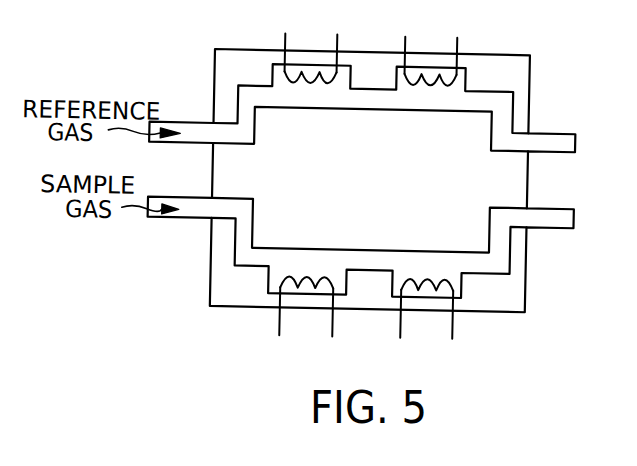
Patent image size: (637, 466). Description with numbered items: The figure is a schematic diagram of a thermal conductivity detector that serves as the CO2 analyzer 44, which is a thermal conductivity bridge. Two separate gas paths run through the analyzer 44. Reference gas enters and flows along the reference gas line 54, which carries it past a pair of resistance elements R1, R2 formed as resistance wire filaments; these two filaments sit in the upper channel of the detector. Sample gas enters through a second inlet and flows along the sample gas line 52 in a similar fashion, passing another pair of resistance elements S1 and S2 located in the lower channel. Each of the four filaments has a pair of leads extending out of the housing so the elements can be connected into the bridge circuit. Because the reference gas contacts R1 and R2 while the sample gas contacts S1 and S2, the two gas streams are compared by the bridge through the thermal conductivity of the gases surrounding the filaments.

The CO2 analyzer 44 is at (233, 307).
The sample gas line 52 is at (404, 252).
The reference gas line 54 is at (354, 99).
The resistance element R1 is at (310, 46).
The resistance element R2 is at (431, 47).
The resistance element S1 is at (306, 316).
The resistance element S2 is at (427, 319).